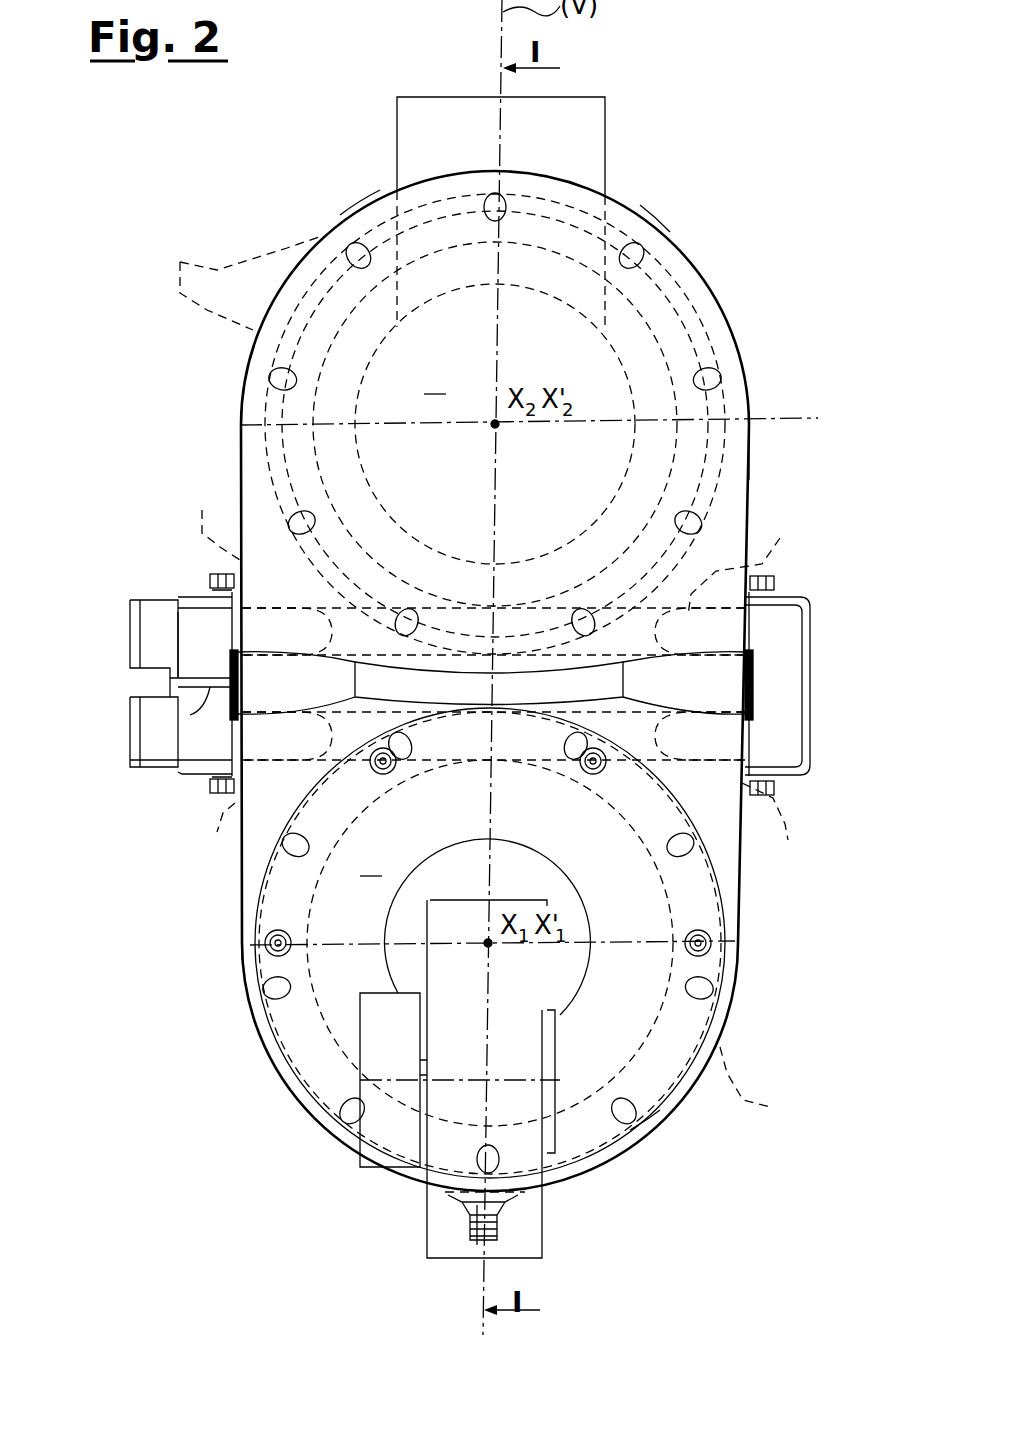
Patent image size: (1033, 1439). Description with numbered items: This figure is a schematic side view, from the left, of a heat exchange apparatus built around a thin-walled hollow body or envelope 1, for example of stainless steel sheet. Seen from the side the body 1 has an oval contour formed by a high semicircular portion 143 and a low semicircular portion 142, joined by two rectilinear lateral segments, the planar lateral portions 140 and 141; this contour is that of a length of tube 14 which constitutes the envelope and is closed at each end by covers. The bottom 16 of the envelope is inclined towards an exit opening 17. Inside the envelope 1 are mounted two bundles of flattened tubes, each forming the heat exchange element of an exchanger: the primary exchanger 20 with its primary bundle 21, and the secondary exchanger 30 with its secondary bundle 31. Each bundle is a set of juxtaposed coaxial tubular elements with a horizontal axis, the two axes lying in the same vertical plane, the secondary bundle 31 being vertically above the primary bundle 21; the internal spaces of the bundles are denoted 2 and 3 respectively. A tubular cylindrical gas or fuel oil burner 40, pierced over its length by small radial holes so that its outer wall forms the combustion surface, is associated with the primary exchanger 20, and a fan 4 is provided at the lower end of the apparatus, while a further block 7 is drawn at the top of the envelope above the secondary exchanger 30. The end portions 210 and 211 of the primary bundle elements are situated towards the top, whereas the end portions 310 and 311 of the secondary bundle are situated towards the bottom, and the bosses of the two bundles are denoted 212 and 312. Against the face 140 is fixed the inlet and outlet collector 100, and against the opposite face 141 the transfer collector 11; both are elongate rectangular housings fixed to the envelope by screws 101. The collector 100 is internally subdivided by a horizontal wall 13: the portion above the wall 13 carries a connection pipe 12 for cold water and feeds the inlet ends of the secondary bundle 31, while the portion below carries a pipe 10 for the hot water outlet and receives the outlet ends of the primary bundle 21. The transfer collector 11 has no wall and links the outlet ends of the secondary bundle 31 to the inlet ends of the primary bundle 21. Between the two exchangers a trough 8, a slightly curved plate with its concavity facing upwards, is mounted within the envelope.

The hollow body 1 is at (755, 434).
The internal space of the primary bundle 2 is at (475, 927).
The internal space of the secondary bundle 3 is at (495, 424).
The fan 4 is at (536, 1223).
The upper connector block 7 is at (600, 143).
The trough 8 is at (625, 678).
The pipe 10 is at (152, 742).
The transfer collector 11 is at (790, 635).
The connection pipe 12 is at (166, 638).
The horizontal wall 13 is at (178, 722).
The length of tube 14 is at (365, 208).
The bottom 16 is at (457, 1193).
The exit opening 17 is at (462, 1228).
The primary exchanger 20 is at (248, 1045).
The primary bundle 21 is at (317, 1073).
The secondary exchanger 30 is at (230, 381).
The secondary bundle 31 is at (673, 322).
The burner 40 is at (607, 900).
The inlet and outlet collector 100 is at (151, 778).
The screws 101 is at (216, 579).
The planar lateral portion 140 is at (241, 905).
The planar lateral portion 141 is at (747, 467).
The low semicircular portion 142 is at (643, 1143).
The high semicircular portion 143 is at (658, 225).
The end portion 210 is at (253, 790).
The end portion 211 is at (737, 794).
The bosses 212 is at (776, 1079).
The end portion 310 is at (209, 517).
The end portion 311 is at (754, 558).
The bosses 312 is at (225, 279).